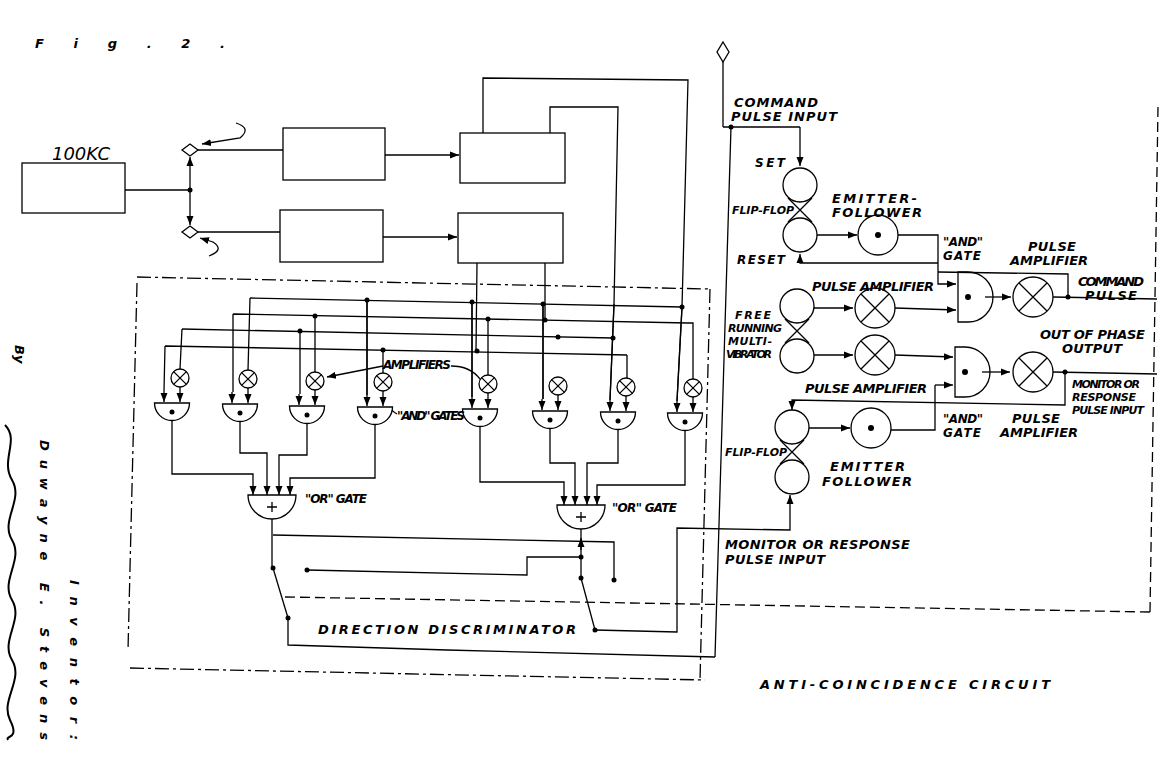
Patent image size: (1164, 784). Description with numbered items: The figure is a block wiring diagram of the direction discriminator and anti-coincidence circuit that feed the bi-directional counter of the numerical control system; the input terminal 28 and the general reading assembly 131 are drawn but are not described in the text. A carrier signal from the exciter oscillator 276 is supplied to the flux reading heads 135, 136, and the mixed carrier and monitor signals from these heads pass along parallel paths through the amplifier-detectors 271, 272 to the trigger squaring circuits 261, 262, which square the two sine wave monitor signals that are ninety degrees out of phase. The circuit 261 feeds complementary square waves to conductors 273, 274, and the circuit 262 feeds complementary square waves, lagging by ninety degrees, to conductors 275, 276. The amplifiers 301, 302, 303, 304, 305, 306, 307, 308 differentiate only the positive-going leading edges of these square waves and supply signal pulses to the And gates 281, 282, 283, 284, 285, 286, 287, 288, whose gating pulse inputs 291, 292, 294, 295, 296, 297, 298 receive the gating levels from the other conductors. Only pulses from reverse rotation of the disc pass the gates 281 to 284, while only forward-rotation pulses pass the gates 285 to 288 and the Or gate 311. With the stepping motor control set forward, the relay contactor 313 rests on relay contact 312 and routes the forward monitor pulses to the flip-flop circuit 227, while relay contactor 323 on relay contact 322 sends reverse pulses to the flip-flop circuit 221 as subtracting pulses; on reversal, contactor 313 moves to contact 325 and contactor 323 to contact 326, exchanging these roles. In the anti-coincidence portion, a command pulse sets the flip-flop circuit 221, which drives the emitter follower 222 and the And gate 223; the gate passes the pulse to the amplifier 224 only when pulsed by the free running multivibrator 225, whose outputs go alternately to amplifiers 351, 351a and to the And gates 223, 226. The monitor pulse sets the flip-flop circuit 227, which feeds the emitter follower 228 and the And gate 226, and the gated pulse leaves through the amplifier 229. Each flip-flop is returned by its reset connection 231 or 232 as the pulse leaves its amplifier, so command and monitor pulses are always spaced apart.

The command pulse input terminal 28 is at (729, 47).
The flux reading head and amplifier assembly 131 is at (433, 96).
The flux reading head 135 is at (182, 149).
The flux reading head 136 is at (181, 232).
The conductor 276 is at (57, 215).
The amplifier-detector 271 is at (388, 144).
The amplifier-detector 272 is at (377, 218).
The trigger squaring circuit 261 is at (565, 150).
The trigger squaring circuit 262 is at (563, 232).
The conductor 273 is at (592, 53).
The conductor 274 is at (620, 147).
The conductor 275 is at (547, 270).
The flip-flop circuit 221 is at (250, 500).
The emitter follower circuit 222 is at (897, 226).
The And gate circuit 223 is at (990, 276).
The amplifier 224 is at (1024, 315).
The free running multivibrator 225 is at (786, 296).
The And gate 226 is at (974, 365).
The flip-flop circuit 227 is at (803, 488).
The emitter follower circuit 228 is at (893, 442).
The amplifier 229 is at (1022, 384).
The reset connection 231 is at (869, 252).
The reset connection 232 is at (1001, 388).
The amplifier 351 is at (893, 323).
The amplifier 351a is at (893, 352).
The And gate 281 is at (190, 413).
The And gate 282 is at (258, 414).
The And gate 283 is at (325, 416).
The And gate 284 is at (393, 418).
The And gate 285 is at (466, 422).
The And gate 286 is at (536, 422).
The And gate 287 is at (606, 424).
The And gate 288 is at (672, 425).
The gating pulse input 291 is at (163, 355).
The gating pulse input 292 is at (232, 372).
The gating pulse input 294 is at (366, 374).
The gating pulse input 295 is at (470, 390).
The gating pulse input 296 is at (541, 392).
The gating pulse input 297 is at (609, 393).
The gating pulse input 298 is at (679, 345).
The amplifier 301 is at (187, 373).
The amplifier 302 is at (255, 374).
The amplifier 303 is at (322, 375).
The amplifier 304 is at (392, 382).
The amplifier 305 is at (497, 386).
The amplifier 306 is at (564, 381).
The amplifier 307 is at (631, 381).
The amplifier 308 is at (702, 389).
The Or gate 311 is at (559, 511).
The relay contact 312 is at (578, 578).
The relay contactor 313 is at (575, 586).
The relay contact 322 is at (270, 569).
The relay contactor 323 is at (280, 592).
The contact 325 is at (616, 579).
The contact 326 is at (308, 569).